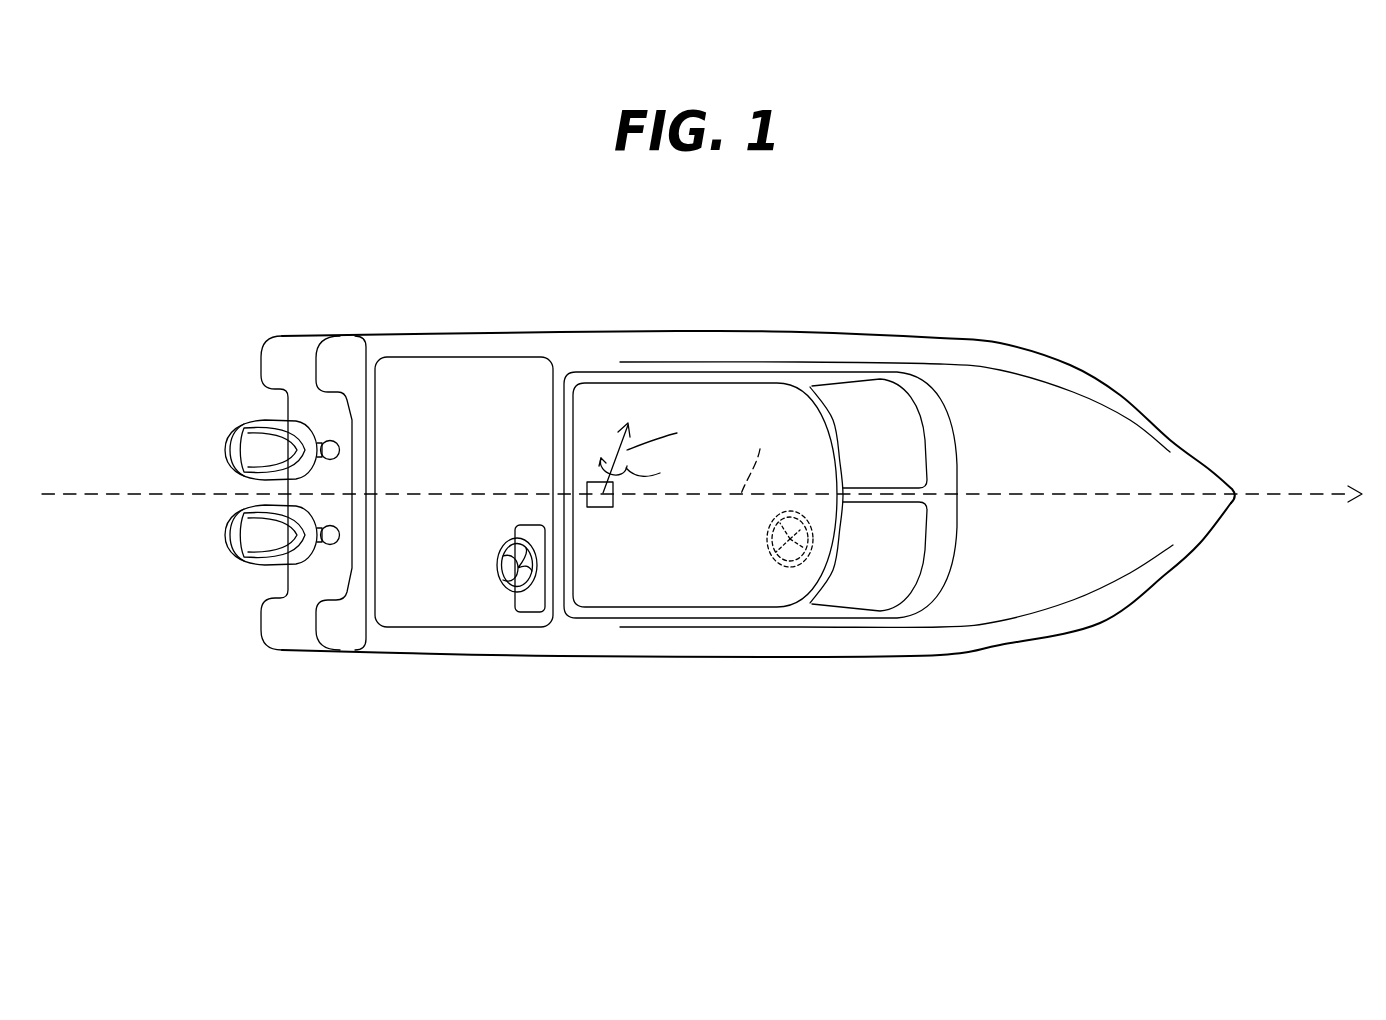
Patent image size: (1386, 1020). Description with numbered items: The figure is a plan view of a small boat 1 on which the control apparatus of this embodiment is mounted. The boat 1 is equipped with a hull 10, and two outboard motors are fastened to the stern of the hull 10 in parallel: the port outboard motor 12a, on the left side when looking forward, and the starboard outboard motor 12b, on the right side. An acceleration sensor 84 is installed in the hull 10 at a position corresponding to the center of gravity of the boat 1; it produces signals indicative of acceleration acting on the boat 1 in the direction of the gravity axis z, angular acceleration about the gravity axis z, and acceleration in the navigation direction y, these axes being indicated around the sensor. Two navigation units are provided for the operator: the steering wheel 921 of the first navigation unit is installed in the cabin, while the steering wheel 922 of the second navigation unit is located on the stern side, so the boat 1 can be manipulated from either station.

The boat 1 is at (684, 331).
The hull 10 is at (832, 332).
The port outboard motor 12a is at (228, 436).
The starboard outboard motor 12b is at (230, 560).
The acceleration sensor 84 is at (603, 508).
The steering wheel 921 is at (787, 563).
The steering wheel 922 is at (512, 593).